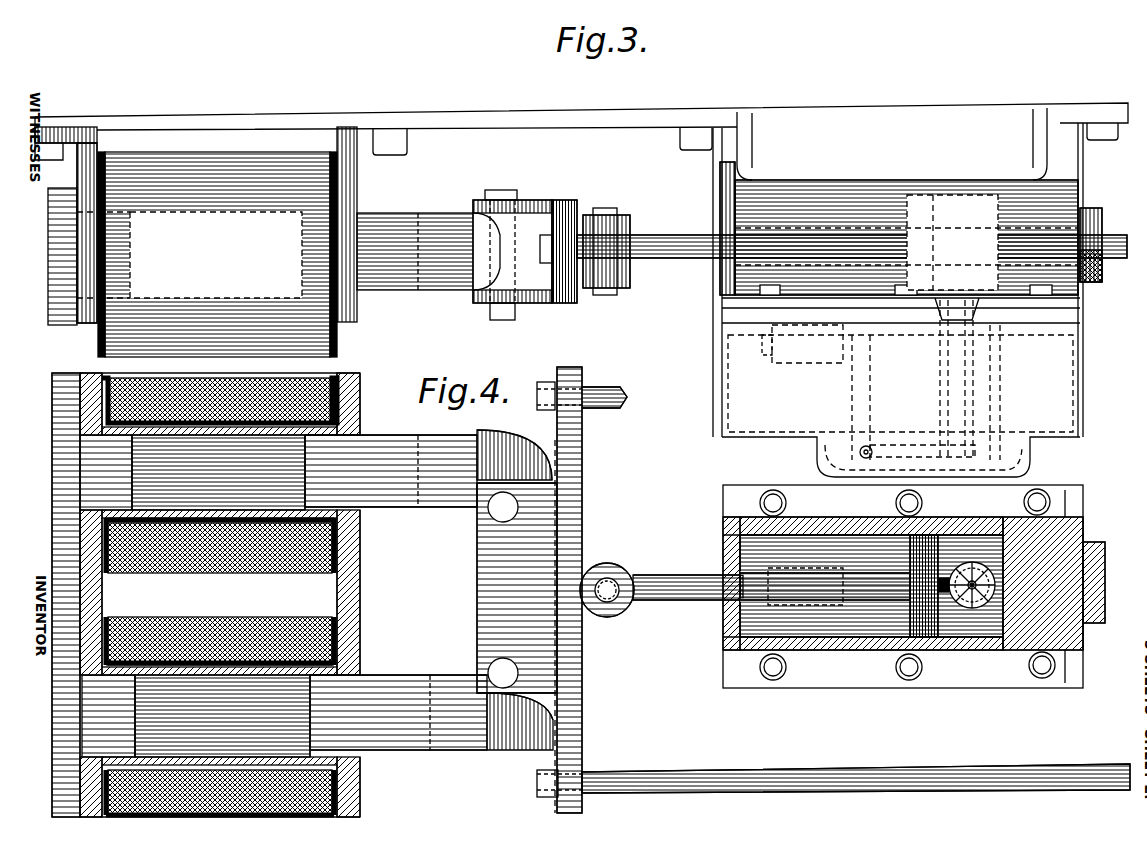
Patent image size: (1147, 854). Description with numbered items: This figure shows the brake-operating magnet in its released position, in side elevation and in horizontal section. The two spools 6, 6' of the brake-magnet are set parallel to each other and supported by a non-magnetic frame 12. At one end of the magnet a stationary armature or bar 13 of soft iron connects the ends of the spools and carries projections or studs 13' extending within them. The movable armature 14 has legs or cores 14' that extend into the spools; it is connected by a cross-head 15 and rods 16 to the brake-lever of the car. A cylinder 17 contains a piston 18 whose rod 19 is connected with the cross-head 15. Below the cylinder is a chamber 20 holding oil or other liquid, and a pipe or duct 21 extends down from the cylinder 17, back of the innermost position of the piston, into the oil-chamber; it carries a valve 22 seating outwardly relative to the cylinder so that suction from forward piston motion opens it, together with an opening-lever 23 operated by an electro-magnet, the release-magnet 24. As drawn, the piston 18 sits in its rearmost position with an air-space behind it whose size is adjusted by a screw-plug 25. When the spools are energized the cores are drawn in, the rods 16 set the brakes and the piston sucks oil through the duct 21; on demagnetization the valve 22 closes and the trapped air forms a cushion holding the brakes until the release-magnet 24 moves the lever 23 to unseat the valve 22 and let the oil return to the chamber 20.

In FIG. 4, the spool 6 is at (220, 596).
In FIG. 3, the spool 6' is at (207, 254).
In FIG. 4, the spool 6' is at (219, 596).
In FIG. 3, the non-magnetic frame 12 is at (350, 190).
In FIG. 4, the non-magnetic frame 12 is at (360, 600).
In FIG. 3, the stationary armature 13 is at (48, 256).
In FIG. 4, the stationary armature 13 is at (49, 595).
In FIG. 4, the projections or studs 13' is at (74, 601).
In FIG. 3, the movable armature 14 is at (511, 255).
In FIG. 4, the movable armature 14 is at (515, 605).
In FIG. 3, the legs or cores 14' is at (415, 265).
In FIG. 4, the legs or cores 14' is at (309, 596).
In FIG. 3, the cross-head 15 is at (553, 205).
In FIG. 4, the cross-head 15 is at (575, 556).
In FIG. 3, the rods 16 is at (628, 262).
In FIG. 4, the rods 16 is at (610, 408).
In FIG. 3, the cylinder 17 is at (899, 226).
In FIG. 4, the cylinder 17 is at (877, 650).
In FIG. 3, the piston 18 is at (906, 242).
In FIG. 4, the piston 18 is at (930, 650).
In FIG. 3, the piston rod 19 is at (652, 238).
In FIG. 4, the piston rod 19 is at (678, 600).
In FIG. 3, the oil chamber 20 is at (901, 387).
In FIG. 3, the pipe or duct 21 is at (1003, 350).
In FIG. 3, the valve 22 is at (957, 379).
In FIG. 4, the valve 22 is at (966, 581).
In FIG. 3, the opening-lever 23 is at (903, 445).
In FIG. 3, the release-magnet 24 is at (803, 363).
In FIG. 3, the screw-plug 25 is at (1092, 208).
In FIG. 4, the screw-plug 25 is at (1054, 583).